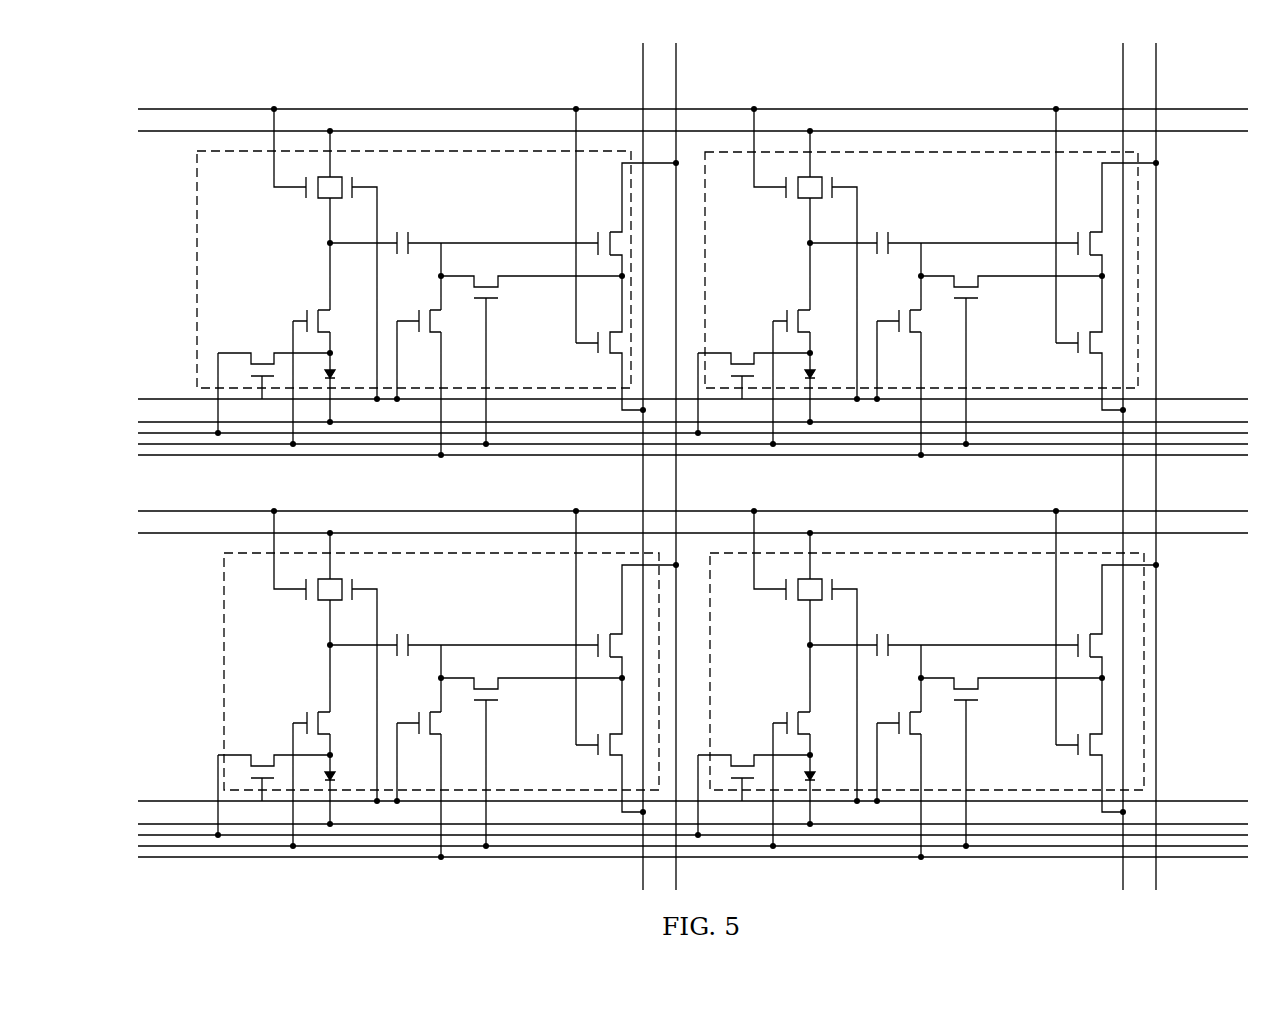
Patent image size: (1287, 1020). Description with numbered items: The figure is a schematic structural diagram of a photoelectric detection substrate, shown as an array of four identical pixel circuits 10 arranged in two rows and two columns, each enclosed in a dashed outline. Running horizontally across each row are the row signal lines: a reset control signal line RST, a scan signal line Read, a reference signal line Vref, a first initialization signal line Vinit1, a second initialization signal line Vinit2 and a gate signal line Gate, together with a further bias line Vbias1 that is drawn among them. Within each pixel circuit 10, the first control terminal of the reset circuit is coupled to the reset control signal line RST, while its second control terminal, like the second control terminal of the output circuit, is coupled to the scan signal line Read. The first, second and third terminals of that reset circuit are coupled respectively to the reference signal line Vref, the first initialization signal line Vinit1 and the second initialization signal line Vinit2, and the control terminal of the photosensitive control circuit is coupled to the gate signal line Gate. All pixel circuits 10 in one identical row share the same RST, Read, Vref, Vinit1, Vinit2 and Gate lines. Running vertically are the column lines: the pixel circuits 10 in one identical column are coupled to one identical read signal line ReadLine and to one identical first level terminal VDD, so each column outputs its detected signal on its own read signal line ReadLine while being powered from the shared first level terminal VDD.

The pixel circuit 10 is at (421, 150).
The scan signal line Read is at (670, 310).
The reference signal line Vref is at (671, 332).
The reset control signal line RST is at (671, 598).
The bias voltage line Vbias1 is at (670, 622).
The first initialization signal line Vinit1 is at (672, 633).
The gate signal line Gate is at (676, 645).
The second initialization signal line Vinit2 is at (672, 657).
The read signal line ReadLine is at (853, 453).
The first level terminal VDD is at (930, 453).